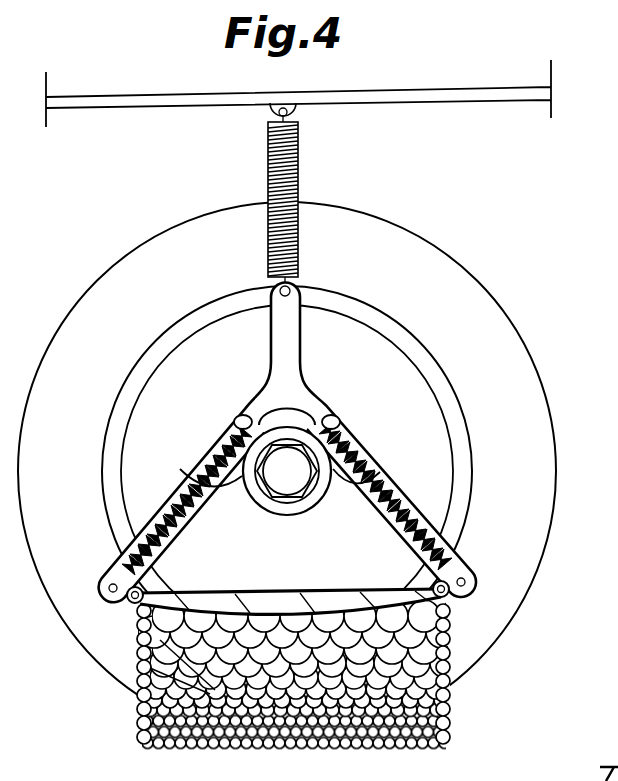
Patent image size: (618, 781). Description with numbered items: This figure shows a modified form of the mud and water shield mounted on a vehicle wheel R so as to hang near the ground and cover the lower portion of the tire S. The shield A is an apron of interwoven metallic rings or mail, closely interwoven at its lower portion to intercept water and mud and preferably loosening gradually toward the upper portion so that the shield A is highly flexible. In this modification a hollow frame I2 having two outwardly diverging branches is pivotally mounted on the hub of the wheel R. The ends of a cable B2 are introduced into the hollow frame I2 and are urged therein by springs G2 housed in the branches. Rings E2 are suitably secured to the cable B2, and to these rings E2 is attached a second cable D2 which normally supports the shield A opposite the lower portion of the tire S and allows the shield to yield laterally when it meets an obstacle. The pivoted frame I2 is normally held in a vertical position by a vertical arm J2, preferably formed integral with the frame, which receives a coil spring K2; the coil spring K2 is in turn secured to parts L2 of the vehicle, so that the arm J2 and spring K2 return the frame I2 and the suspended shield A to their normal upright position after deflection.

The parts of the vehicle L2 is at (157, 97).
The coil spring K2 is at (300, 168).
The tire S is at (125, 318).
The vehicle wheel R is at (385, 372).
The vertical arm J2 is at (283, 340).
The spring G2 is at (408, 468).
The hollow frame I2 is at (330, 430).
The cable B2 is at (327, 589).
The cable D2 is at (272, 606).
The rings E2 is at (433, 583).
The shield A is at (210, 696).